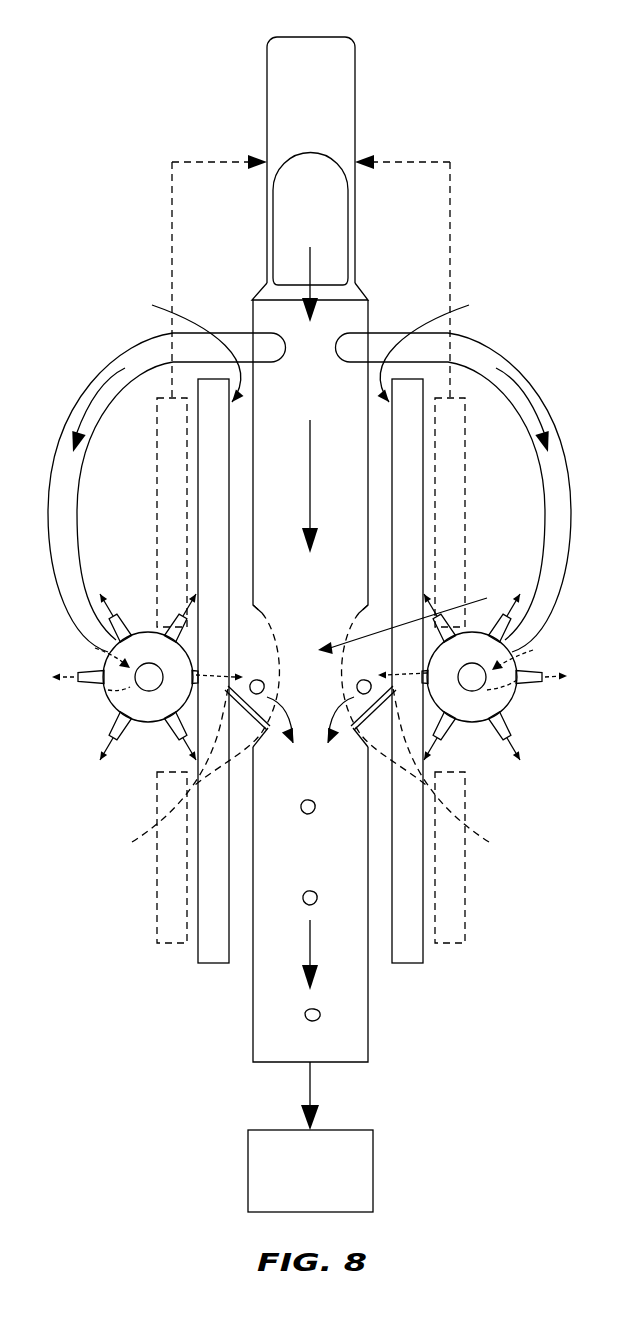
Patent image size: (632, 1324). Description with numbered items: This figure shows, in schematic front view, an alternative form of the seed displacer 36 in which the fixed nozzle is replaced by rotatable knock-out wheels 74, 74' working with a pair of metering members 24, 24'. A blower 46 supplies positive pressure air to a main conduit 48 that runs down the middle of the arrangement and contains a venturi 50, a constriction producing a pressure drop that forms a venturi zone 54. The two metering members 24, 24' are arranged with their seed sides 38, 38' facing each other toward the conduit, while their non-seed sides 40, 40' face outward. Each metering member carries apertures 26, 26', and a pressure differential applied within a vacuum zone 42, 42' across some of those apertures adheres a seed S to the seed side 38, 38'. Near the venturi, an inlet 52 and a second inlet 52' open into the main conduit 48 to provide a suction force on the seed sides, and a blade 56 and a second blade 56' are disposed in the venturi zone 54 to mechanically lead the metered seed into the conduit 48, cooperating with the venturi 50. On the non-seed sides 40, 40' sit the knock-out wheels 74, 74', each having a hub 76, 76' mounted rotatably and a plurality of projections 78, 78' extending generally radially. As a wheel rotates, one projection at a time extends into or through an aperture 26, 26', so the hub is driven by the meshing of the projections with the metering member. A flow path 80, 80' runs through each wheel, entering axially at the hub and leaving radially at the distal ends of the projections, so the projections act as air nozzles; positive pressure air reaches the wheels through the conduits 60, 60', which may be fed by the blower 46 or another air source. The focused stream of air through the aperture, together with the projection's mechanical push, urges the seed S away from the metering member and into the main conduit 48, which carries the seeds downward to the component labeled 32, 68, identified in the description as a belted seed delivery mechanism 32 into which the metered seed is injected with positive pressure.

The blower 46 is at (307, 37).
The main conduit 48 is at (368, 318).
The seed displacer 36 is at (145, 170).
The seed side 38 is at (185, 343).
The seed side of second metering member 38' is at (440, 341).
The conduit 60 is at (162, 490).
The second conduit 60' is at (471, 492).
The vacuum zone 42 is at (150, 670).
The second vacuum zone 42' is at (473, 670).
The metering member 24 is at (194, 703).
The second metering member 24' is at (428, 703).
The non-seed side 40 is at (161, 973).
The non-seed side of second metering member 40' is at (461, 973).
The venturi 50 is at (313, 627).
The inlet 52 is at (192, 660).
The second inlet 52' is at (429, 661).
The apertures 26 is at (164, 777).
The apertures of second metering member 26' is at (457, 777).
The venturi zone 54 is at (415, 614).
The blade 56 is at (185, 800).
The second blade 56' is at (440, 800).
The knock-out wheel 74 is at (126, 724).
The second knock-out wheel 74' is at (495, 723).
The hub 76 is at (138, 716).
The hub of second knock-out wheel 76' is at (482, 716).
The projections 78 is at (116, 682).
The projections of second knock-out wheel 78' is at (512, 677).
The flow path 80 is at (152, 664).
The flow path of second knock-out wheel 80' is at (486, 664).
The seed S is at (313, 817).
The seed delivery mechanism 32 is at (349, 1149).
The collector 68 is at (357, 1128).